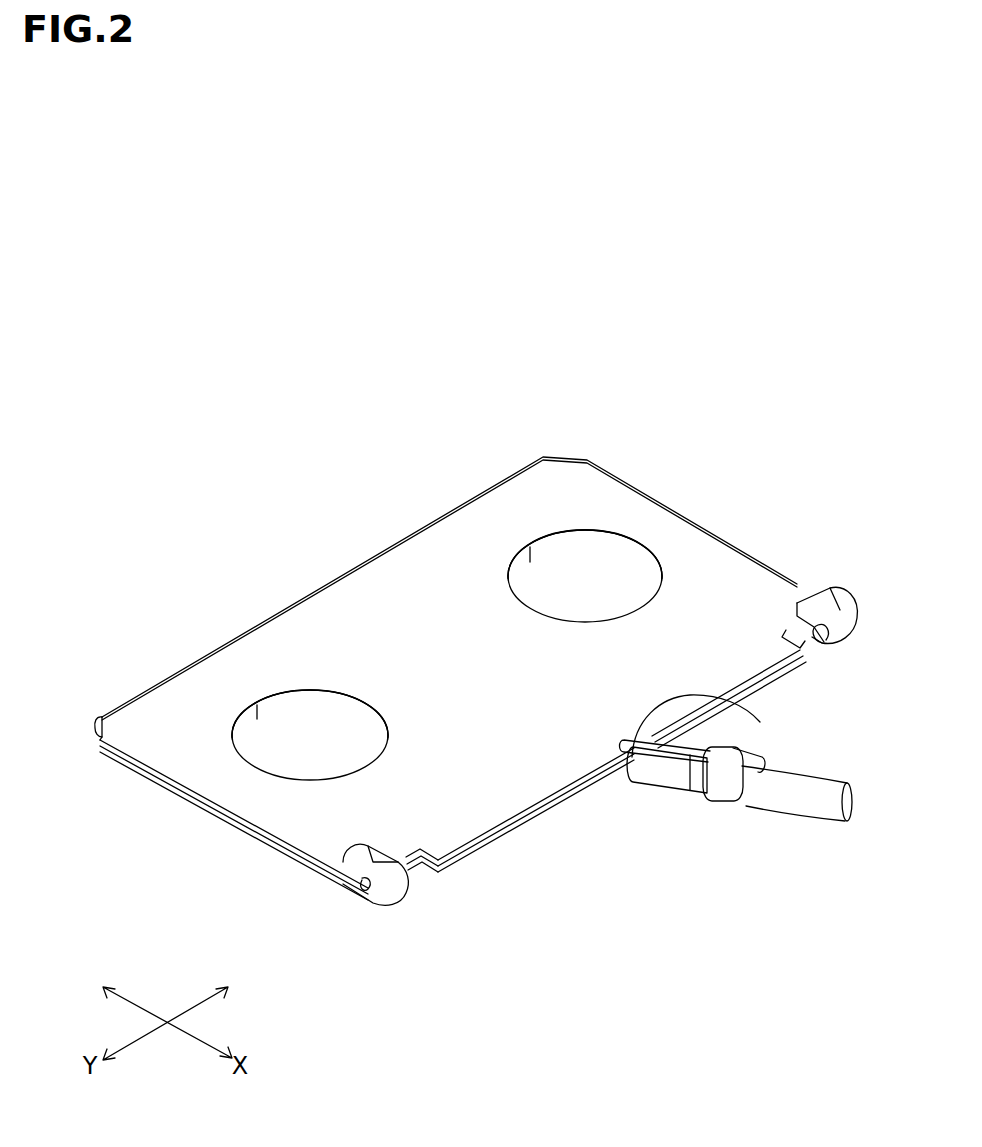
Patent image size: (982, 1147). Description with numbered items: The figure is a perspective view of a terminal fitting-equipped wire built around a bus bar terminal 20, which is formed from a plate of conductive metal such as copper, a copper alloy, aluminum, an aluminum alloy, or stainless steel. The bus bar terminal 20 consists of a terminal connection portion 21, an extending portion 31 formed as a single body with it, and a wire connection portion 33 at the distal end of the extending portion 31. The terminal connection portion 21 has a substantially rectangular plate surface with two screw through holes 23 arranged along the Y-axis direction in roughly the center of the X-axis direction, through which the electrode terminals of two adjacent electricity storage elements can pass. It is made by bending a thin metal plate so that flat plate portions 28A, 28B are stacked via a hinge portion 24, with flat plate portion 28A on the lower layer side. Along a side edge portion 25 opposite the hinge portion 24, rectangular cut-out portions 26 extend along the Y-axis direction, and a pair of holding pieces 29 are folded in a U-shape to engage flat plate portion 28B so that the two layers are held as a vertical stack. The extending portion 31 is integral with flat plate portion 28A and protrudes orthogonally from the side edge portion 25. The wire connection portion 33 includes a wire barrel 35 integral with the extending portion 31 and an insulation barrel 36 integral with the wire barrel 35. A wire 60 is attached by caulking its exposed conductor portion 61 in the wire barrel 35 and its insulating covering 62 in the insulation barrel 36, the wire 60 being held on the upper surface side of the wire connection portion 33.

The bus bar terminal 20 is at (595, 379).
The terminal connection portion 21 is at (408, 573).
The screw through hole 23 is at (626, 569).
The hinge portion 24 is at (97, 718).
The side edge portion 25 is at (473, 848).
The cut-out portion 26 is at (417, 867).
The flat plate portion 28A is at (272, 847).
The flat plate portion 28B is at (237, 817).
The holding piece 29 is at (372, 853).
The extending portion 31 is at (617, 773).
The wire connection portion 33 is at (660, 870).
The wire barrel 35 is at (668, 772).
The insulation barrel 36 is at (725, 783).
The wire 60 is at (860, 687).
The conductor portion 61 is at (717, 700).
The insulating covering 62 is at (787, 780).